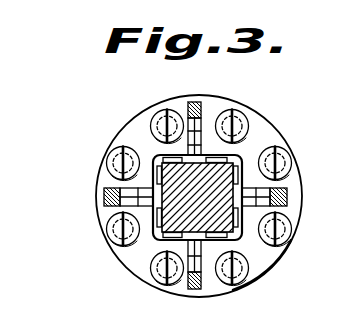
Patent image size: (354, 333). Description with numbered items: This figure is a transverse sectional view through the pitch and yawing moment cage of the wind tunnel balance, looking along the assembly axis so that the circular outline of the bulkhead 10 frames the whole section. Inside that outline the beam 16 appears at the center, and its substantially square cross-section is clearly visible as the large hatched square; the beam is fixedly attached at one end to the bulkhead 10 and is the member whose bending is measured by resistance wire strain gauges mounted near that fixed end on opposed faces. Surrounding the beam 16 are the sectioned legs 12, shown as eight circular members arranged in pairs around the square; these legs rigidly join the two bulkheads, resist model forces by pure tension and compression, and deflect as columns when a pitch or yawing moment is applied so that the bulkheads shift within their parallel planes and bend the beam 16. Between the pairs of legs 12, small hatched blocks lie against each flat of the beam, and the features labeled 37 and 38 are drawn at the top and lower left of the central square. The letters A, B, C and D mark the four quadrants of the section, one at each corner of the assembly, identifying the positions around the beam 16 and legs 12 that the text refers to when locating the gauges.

The bulkhead 10 is at (228, 104).
The legs 12 is at (104, 195).
The beam 16 is at (287, 209).
The top clamping block 37 is at (197, 112).
The square frame with hatched core 38 is at (172, 241).
The bolt A is at (112, 143).
The bolt B is at (116, 256).
The bolt C is at (238, 245).
The bolt D is at (277, 131).